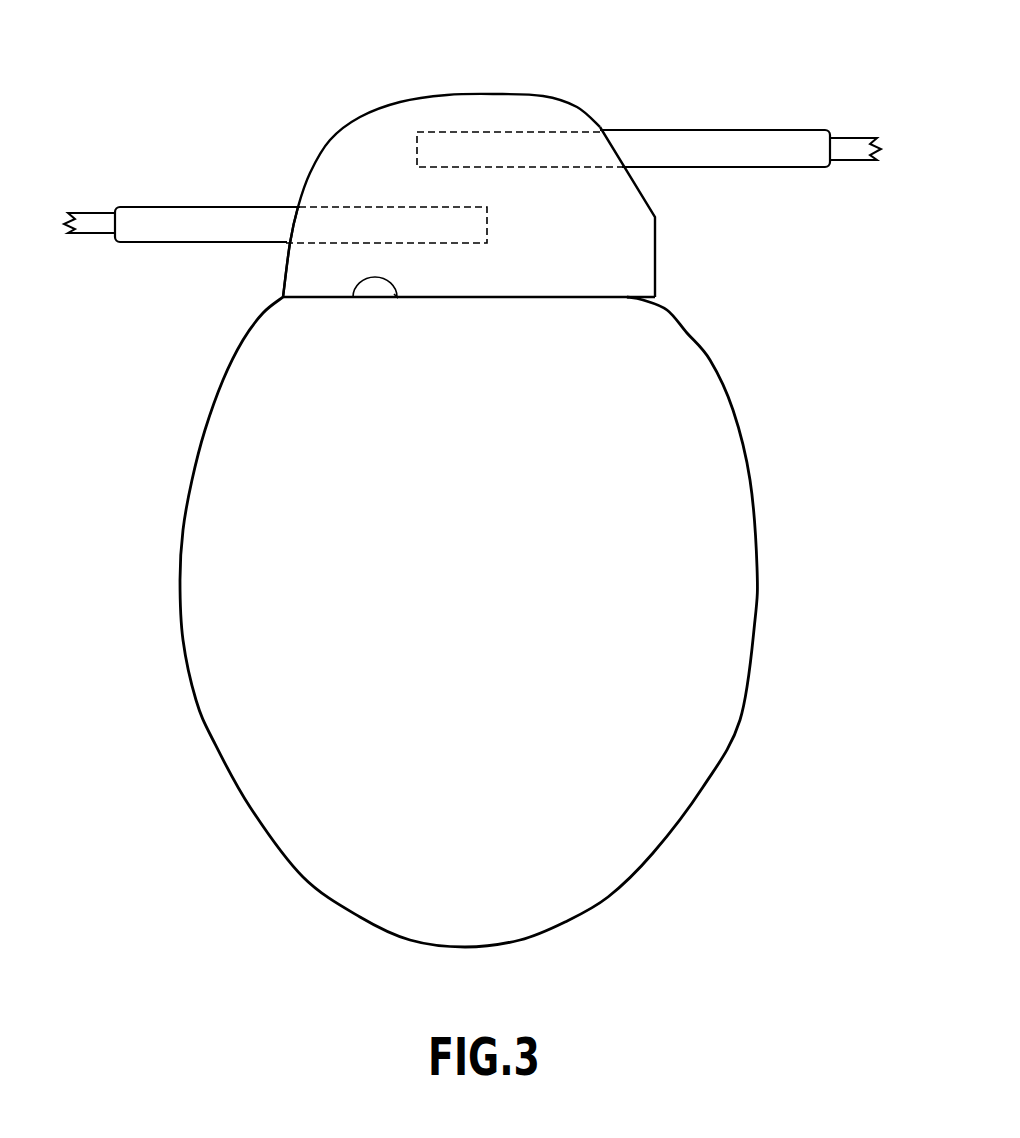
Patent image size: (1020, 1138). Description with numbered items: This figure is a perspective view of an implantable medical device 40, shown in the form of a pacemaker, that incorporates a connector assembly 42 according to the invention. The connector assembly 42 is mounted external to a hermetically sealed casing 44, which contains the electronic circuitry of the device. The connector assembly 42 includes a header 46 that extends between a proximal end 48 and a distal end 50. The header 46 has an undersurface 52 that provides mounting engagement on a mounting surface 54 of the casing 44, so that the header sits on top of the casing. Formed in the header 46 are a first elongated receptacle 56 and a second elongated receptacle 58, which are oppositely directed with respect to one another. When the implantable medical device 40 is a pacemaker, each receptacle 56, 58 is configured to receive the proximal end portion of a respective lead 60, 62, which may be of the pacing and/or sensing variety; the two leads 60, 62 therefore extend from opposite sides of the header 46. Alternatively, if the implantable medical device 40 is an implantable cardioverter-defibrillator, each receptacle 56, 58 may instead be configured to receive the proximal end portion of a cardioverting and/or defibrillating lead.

The implantable medical device 40 is at (138, 542).
The connector assembly 42 is at (485, 197).
The hermetically sealed casing 44 is at (482, 548).
The header 46 is at (352, 102).
The proximal end 48 is at (333, 177).
The distal end 50 is at (635, 247).
The undersurface 52 is at (473, 297).
The mounting surface 54 is at (353, 297).
The first elongated receptacle 56 is at (572, 132).
The second elongated receptacle 58 is at (442, 210).
The lead 60 is at (733, 152).
The lead 62 is at (233, 232).